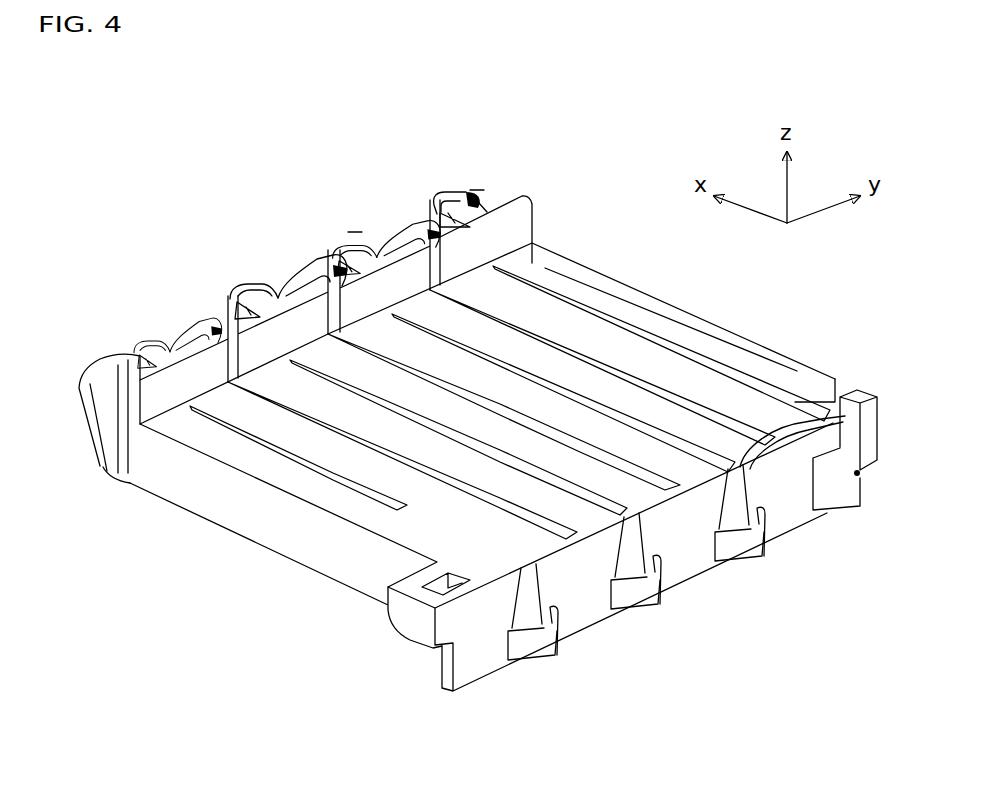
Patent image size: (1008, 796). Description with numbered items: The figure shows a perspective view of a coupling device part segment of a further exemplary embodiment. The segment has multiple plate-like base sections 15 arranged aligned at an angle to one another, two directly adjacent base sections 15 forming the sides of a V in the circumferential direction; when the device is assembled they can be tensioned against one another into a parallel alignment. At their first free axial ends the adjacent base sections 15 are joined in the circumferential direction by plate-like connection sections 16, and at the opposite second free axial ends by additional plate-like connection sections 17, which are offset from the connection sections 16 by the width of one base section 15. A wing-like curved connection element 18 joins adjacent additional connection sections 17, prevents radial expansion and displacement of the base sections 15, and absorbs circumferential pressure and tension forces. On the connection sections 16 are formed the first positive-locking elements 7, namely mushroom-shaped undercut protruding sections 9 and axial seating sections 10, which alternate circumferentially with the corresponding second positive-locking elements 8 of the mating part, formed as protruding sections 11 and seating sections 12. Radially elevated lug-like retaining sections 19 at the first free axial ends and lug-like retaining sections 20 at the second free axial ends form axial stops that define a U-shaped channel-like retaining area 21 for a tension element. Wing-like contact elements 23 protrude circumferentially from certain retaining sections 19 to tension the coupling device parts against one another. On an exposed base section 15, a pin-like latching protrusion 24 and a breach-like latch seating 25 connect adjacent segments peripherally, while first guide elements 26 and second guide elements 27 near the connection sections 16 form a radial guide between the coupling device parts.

The first positive-locking elements 7 is at (209, 285).
The second positive-locking elements 8 is at (150, 343).
The sections with mushroom-shaped undercut free end 9 is at (445, 173).
The axial seating sections 10 is at (347, 203).
The sections with mushroom-shaped undercut free end 11 is at (445, 191).
The axial seating sections 12 is at (340, 233).
The base sections 15 is at (270, 473).
The plate-like connection sections 16 is at (143, 465).
The additional plate-like connection sections 17 is at (580, 613).
The wing-like curved connection element 18 is at (535, 647).
The first lug-like retaining sections 19 is at (510, 227).
The lug-like retaining sections 20 is at (790, 437).
The channel-like retaining area 21 is at (633, 365).
The wing-like contact elements 23 is at (200, 320).
The connection element (latching protrusion) 24 is at (856, 394).
The connection element (latch seating) 25 is at (450, 573).
The first guide elements 26 is at (430, 152).
The second guide elements 27 is at (355, 231).